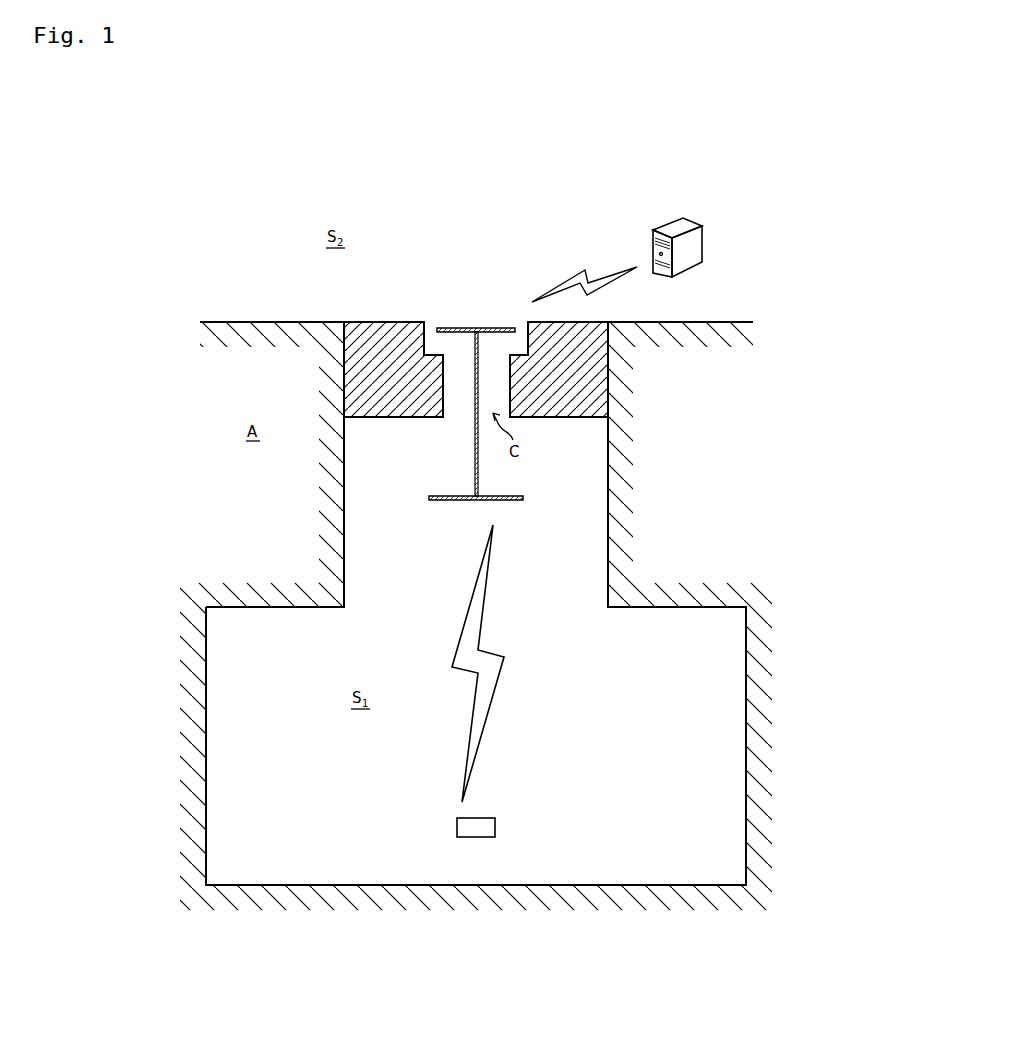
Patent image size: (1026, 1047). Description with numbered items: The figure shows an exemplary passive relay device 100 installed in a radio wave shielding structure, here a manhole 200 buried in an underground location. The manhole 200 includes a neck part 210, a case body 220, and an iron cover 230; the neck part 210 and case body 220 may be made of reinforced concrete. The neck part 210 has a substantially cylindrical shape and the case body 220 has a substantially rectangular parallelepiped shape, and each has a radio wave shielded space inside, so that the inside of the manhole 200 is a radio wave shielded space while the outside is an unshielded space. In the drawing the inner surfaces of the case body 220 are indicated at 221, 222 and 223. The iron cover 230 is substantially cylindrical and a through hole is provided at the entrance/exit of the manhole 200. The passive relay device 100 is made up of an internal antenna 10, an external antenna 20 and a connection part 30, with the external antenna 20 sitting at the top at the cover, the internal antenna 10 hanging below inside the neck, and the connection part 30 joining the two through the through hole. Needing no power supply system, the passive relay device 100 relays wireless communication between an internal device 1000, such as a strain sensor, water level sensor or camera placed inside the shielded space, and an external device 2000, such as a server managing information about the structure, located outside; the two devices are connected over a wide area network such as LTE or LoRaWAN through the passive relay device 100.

The internal antenna 10 is at (458, 500).
The external antenna 20 is at (475, 328).
The connection part 30 is at (478, 492).
The passive relay device 100 is at (494, 415).
The manhole 200 is at (476, 616).
The neck part 210 is at (344, 565).
The case body 220 is at (689, 607).
The upper inner surface of second wall 221 is at (263, 607).
The bottom inner surface of second wall 222 is at (355, 885).
The side inner surface of second wall 223 is at (746, 735).
The iron cover 230 is at (385, 417).
The internal device 1000 is at (495, 827).
The external device 2000 is at (702, 245).